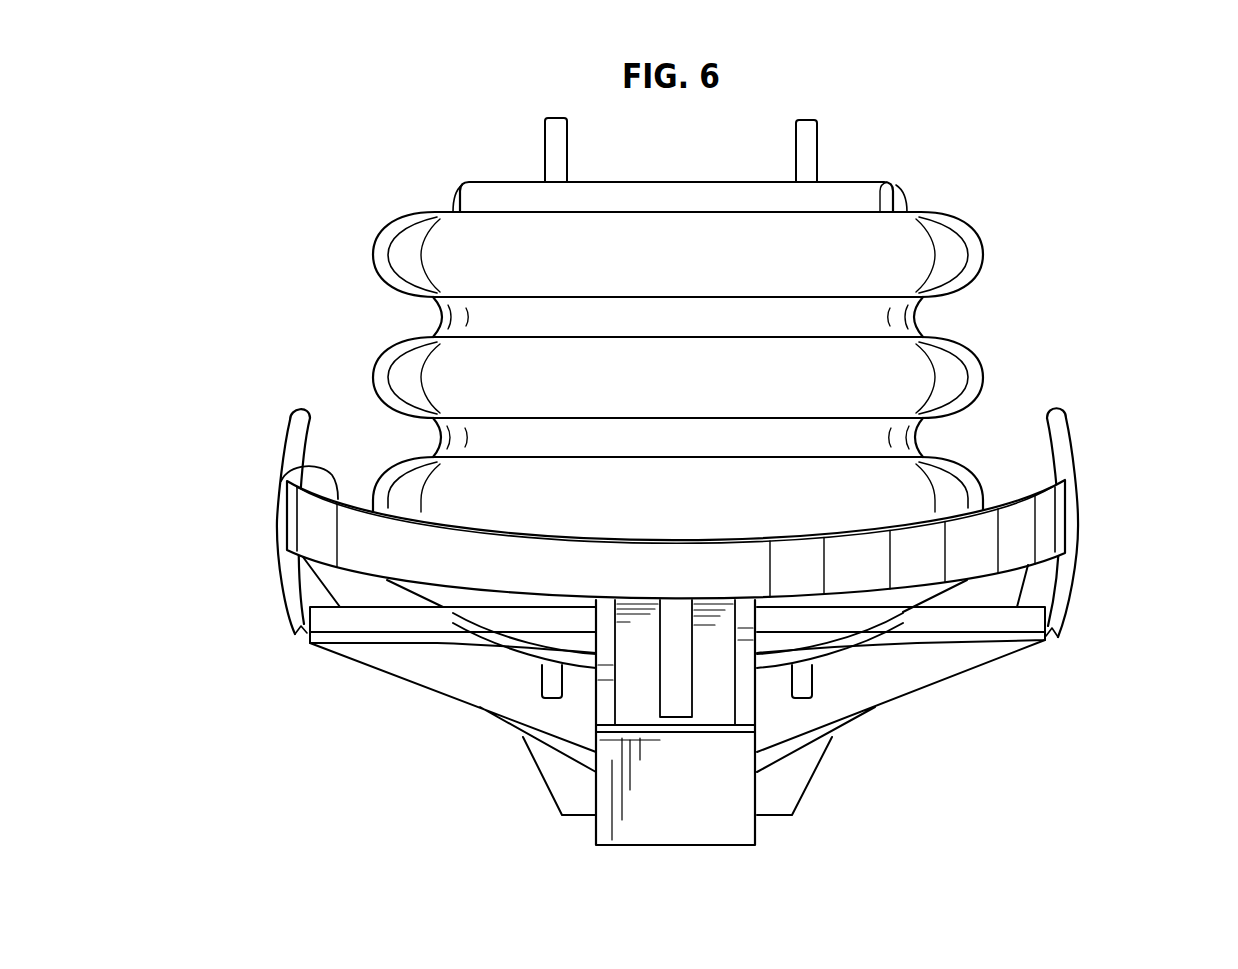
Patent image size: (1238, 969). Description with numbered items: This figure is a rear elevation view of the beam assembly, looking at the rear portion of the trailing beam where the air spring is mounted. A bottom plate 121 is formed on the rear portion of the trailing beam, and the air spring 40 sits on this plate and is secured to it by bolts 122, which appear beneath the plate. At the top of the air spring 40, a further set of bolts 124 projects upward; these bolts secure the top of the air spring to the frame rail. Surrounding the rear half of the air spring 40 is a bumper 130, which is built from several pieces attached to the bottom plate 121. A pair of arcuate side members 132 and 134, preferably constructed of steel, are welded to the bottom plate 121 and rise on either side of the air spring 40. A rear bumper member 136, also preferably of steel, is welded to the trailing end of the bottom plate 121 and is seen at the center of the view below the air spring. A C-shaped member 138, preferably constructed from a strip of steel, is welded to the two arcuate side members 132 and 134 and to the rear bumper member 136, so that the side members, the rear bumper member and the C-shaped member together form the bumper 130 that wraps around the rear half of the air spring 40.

The air spring 40 is at (984, 274).
The bolts 124 is at (818, 155).
The bumper 130 is at (1100, 421).
The arcuate side member 132 is at (287, 438).
The arcuate side member 134 is at (1077, 464).
The C-shaped member 138 is at (292, 468).
The bottom plate 121 is at (970, 642).
The bolts 122 is at (815, 681).
The rear bumper member 136 is at (705, 847).